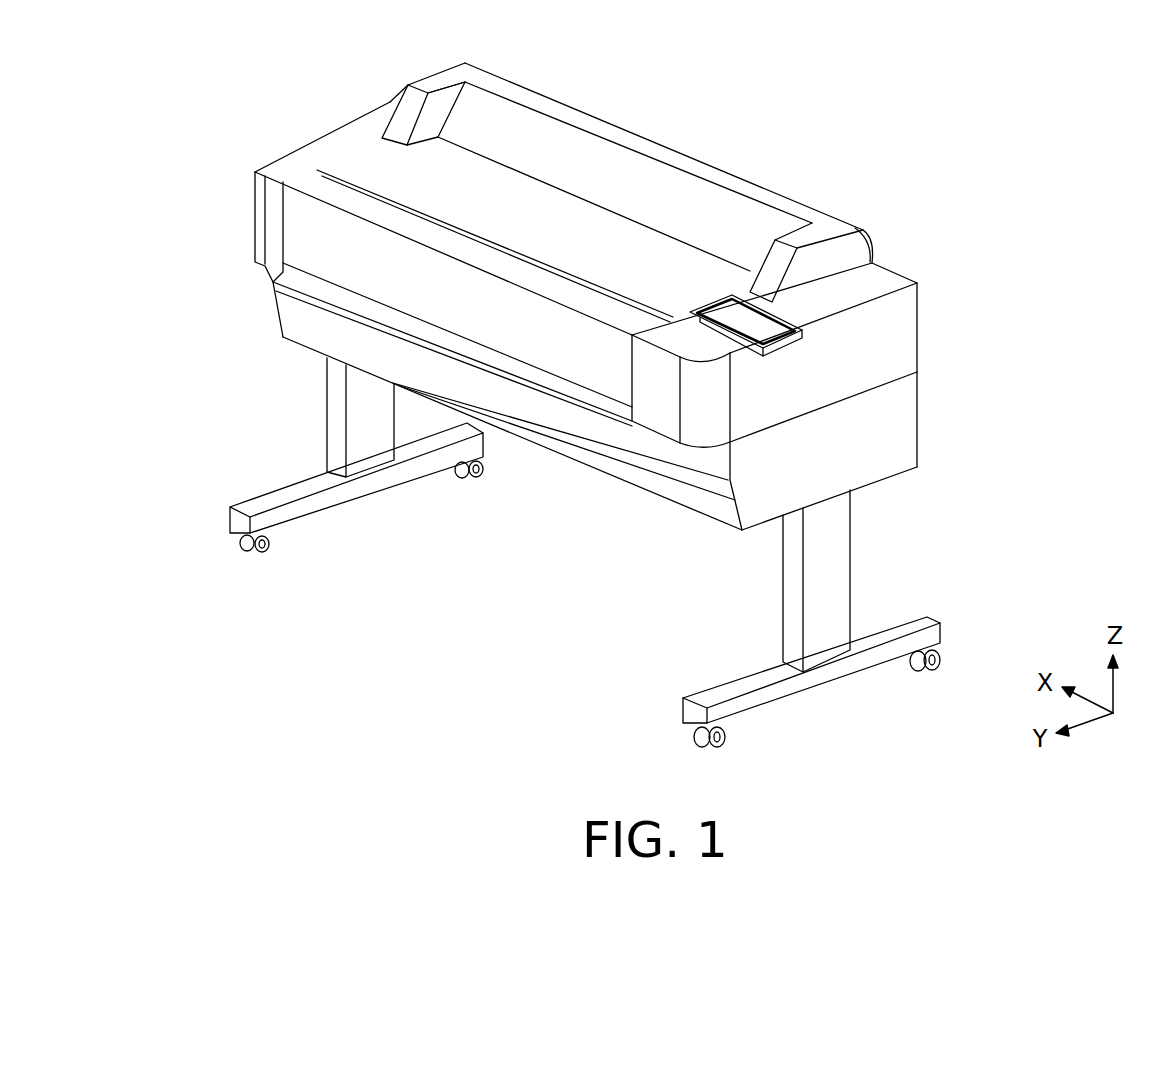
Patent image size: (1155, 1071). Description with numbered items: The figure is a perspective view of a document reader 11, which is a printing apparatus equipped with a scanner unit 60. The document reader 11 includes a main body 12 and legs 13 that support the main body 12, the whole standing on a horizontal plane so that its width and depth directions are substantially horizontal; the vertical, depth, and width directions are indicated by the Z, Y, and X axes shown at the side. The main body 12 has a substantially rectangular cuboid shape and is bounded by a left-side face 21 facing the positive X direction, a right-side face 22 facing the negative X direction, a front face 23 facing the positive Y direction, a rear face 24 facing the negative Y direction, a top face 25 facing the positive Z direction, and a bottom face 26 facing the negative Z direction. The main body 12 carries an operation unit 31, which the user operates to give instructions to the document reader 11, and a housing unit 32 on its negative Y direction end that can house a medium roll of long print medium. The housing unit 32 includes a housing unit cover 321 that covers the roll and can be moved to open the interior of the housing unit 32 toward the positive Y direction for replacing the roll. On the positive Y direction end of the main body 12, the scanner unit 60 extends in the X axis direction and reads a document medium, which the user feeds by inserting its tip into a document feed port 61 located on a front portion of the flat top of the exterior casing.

The document reader 11 is at (867, 122).
The main body 12 is at (897, 322).
The legs 13 is at (832, 540).
The left-side face 21 is at (290, 155).
The right-side face 22 is at (883, 422).
The front face 23 is at (645, 435).
The rear face 24 is at (872, 263).
The top face 25 is at (560, 218).
The bottom face 26 is at (657, 490).
The operation unit 31 is at (727, 313).
The housing unit 32 is at (828, 127).
The housing unit cover 321 is at (847, 212).
The scanner unit 60 is at (357, 267).
The document feed port 61 is at (435, 212).